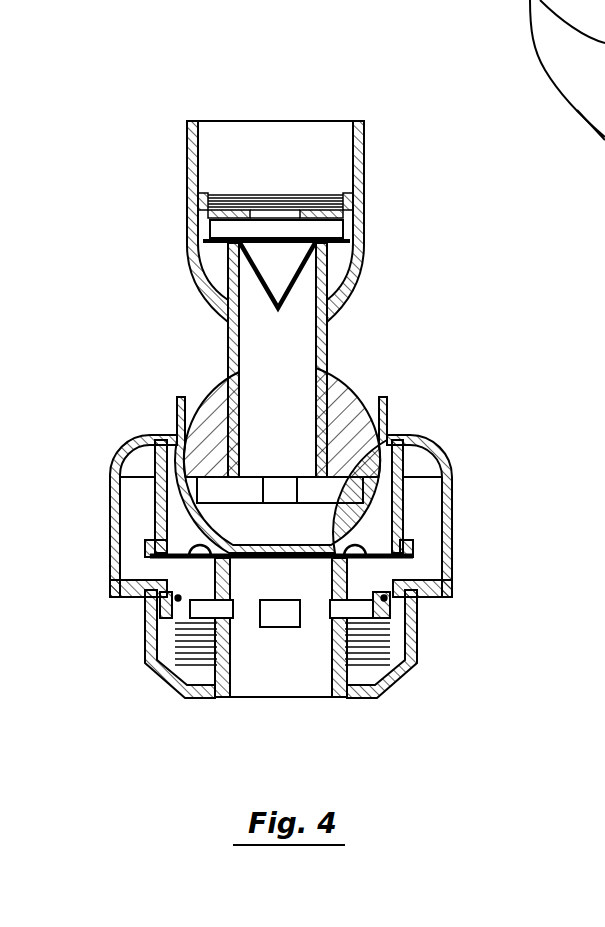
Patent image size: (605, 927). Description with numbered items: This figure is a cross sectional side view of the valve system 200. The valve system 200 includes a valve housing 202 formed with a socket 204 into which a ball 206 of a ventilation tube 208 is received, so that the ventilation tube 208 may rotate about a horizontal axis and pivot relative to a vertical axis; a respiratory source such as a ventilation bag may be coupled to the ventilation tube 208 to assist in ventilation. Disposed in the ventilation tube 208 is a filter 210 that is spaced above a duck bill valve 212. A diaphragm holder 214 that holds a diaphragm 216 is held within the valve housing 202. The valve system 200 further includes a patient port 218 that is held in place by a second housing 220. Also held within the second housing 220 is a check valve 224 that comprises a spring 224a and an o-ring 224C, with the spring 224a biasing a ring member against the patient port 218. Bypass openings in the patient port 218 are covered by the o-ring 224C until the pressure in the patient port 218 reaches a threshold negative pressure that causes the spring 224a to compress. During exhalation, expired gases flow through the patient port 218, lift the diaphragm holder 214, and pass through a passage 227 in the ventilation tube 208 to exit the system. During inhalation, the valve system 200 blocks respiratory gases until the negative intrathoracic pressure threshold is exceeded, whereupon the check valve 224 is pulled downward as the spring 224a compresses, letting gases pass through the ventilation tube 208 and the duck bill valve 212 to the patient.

The valve system 200 is at (173, 148).
The valve housing 202 is at (452, 477).
The socket 204 is at (373, 497).
The ball 206 is at (347, 388).
The ventilation tube 208 is at (294, 338).
The filter 210 is at (238, 208).
The duck bill valve 212 is at (262, 282).
The diaphragm holder 214 is at (152, 490).
The diaphragm 216 is at (250, 543).
The patient port 218 is at (232, 670).
The second housing 220 is at (420, 632).
The check valve 224 is at (173, 622).
The spring 224a is at (187, 648).
The o-ring 224C is at (168, 596).
The passage 227 is at (232, 243).